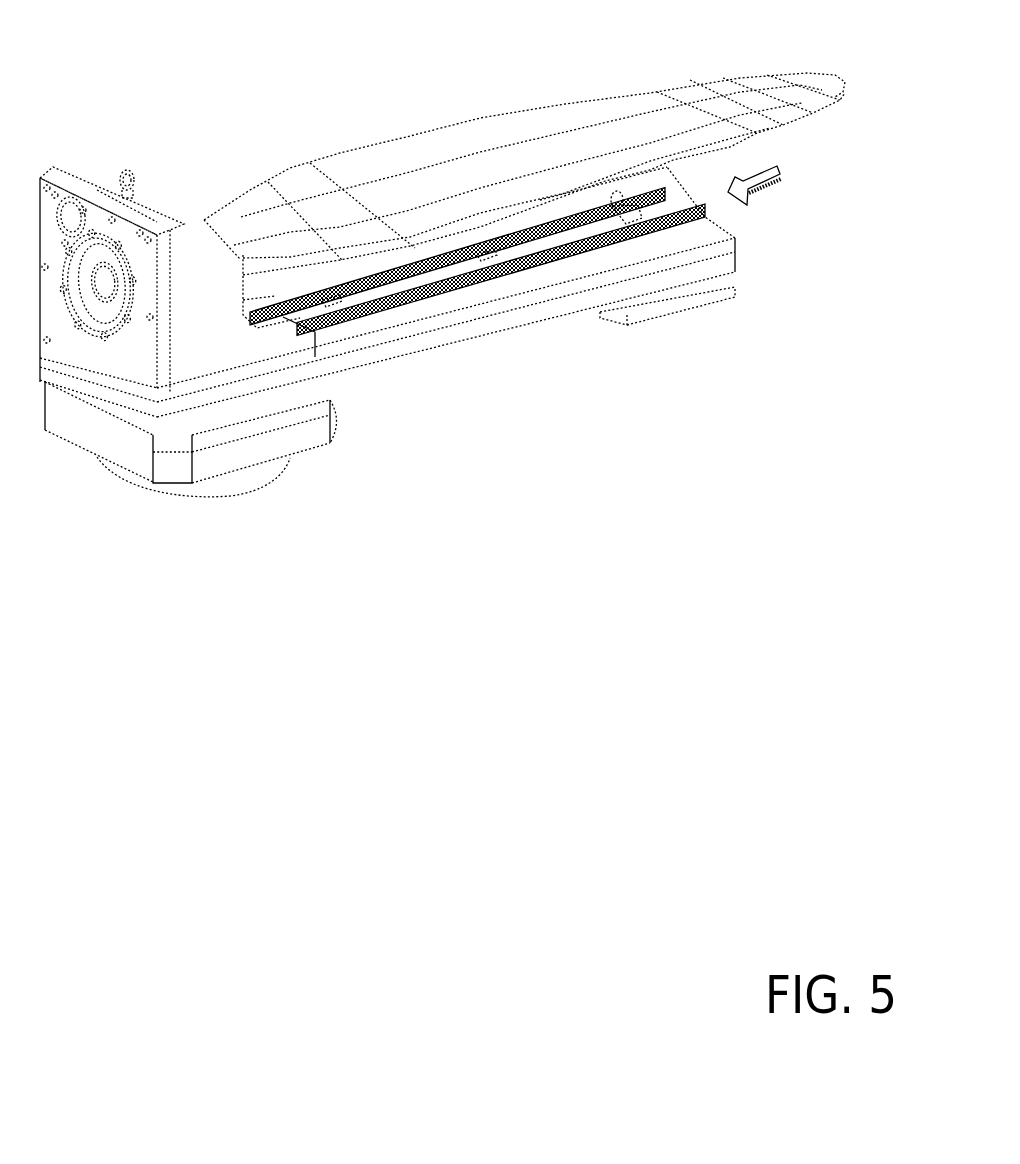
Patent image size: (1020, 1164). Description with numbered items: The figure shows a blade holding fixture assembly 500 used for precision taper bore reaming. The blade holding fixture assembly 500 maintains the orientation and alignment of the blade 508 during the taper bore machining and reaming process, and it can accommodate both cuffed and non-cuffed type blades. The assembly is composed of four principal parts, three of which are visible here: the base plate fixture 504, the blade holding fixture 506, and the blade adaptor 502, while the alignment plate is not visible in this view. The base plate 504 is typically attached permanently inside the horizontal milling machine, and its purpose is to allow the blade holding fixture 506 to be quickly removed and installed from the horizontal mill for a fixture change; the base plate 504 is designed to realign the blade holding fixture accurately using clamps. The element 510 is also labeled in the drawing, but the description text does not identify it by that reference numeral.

The blade holding fixture assembly 500 is at (781, 183).
The blade adaptor 502 is at (121, 302).
The base plate fixture 504 is at (718, 248).
The blade holding fixture 506 is at (63, 170).
The blade 508 is at (578, 98).
The base 510 is at (545, 318).